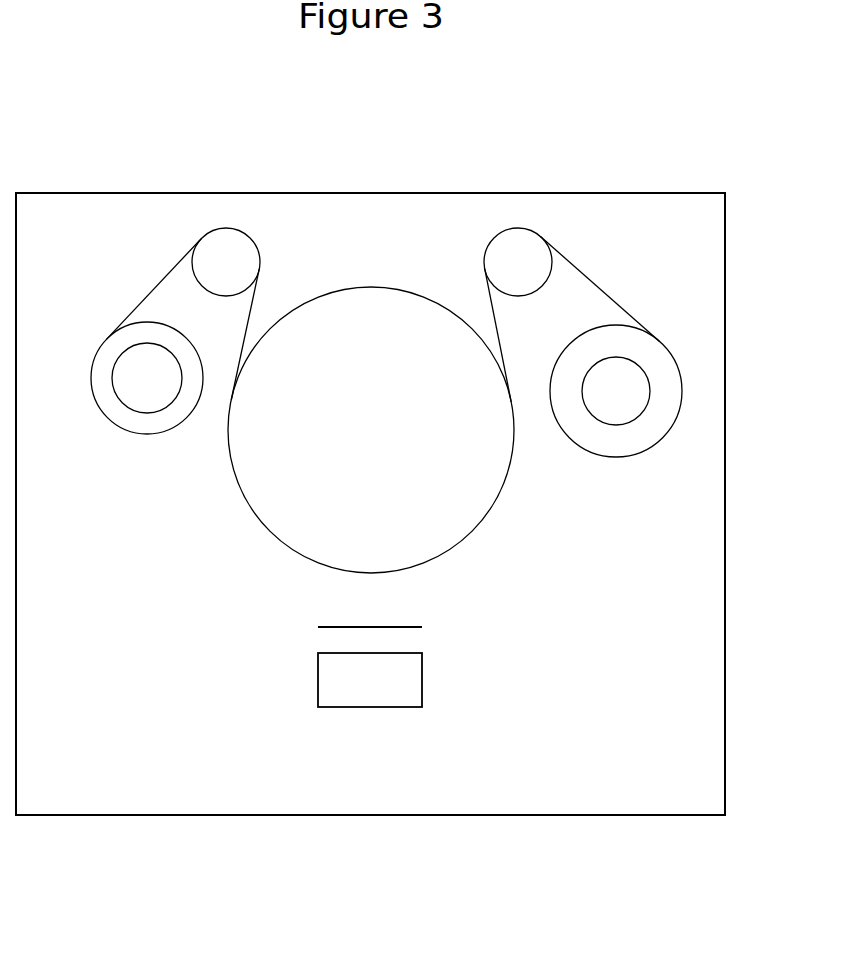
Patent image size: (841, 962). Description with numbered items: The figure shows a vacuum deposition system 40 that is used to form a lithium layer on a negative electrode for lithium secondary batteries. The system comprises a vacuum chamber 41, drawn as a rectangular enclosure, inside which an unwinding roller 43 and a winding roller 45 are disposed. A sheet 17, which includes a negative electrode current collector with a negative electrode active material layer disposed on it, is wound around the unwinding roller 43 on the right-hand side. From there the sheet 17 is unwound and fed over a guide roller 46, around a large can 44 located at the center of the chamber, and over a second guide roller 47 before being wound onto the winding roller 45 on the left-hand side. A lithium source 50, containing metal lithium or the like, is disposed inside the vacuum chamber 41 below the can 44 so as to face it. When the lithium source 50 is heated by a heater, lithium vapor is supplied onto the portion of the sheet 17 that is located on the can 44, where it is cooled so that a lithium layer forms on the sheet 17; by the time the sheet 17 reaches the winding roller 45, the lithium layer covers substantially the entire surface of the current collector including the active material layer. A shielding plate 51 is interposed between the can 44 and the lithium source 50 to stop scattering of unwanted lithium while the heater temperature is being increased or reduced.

The vacuum deposition system 40 is at (110, 175).
The vacuum chamber 41 is at (354, 193).
The unwinding roller 43 is at (658, 340).
The can 44 is at (383, 287).
The winding roller 45 is at (135, 437).
The guide roller 46 is at (487, 252).
The guide roller 47 is at (253, 237).
The sheet 17 is at (488, 300).
The lithium source 50 is at (371, 707).
The shielding plate 51 is at (330, 628).